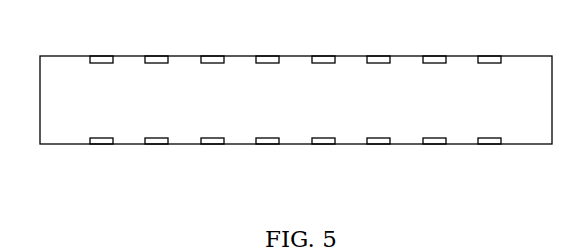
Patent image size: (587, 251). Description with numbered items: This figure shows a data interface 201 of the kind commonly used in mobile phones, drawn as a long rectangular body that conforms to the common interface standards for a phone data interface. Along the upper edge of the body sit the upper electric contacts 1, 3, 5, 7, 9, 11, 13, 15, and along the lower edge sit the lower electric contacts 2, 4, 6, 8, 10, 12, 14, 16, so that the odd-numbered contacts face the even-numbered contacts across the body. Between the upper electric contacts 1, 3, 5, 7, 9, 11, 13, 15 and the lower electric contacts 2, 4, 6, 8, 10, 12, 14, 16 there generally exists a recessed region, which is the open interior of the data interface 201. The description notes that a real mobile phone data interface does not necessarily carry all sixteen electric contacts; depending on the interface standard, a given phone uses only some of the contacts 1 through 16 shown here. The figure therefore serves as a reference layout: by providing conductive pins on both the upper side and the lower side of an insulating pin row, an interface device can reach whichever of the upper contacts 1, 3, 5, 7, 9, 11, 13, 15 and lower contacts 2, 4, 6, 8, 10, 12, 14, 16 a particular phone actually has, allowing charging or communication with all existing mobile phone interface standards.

The package body 201 is at (218, 60).
The electric contact 1 is at (101, 55).
The electric contact 2 is at (101, 147).
The electric contact 3 is at (156, 55).
The electric contact 4 is at (156, 147).
The electric contact 5 is at (212, 55).
The electric contact 6 is at (212, 147).
The electric contact 7 is at (267, 55).
The electric contact 8 is at (267, 147).
The electric contact 9 is at (323, 55).
The electric contact 10 is at (323, 147).
The electric contact 11 is at (378, 55).
The electric contact 12 is at (378, 147).
The electric contact 13 is at (434, 55).
The electric contact 14 is at (434, 147).
The electric contact 15 is at (489, 55).
The electric contact 16 is at (489, 147).